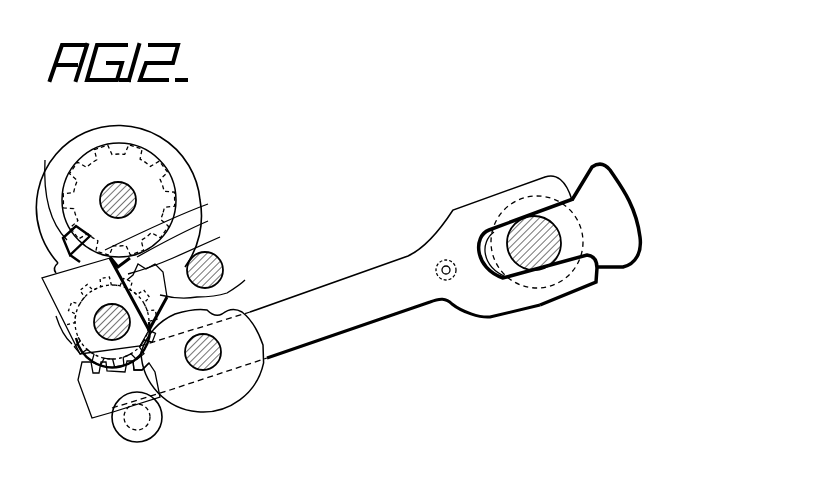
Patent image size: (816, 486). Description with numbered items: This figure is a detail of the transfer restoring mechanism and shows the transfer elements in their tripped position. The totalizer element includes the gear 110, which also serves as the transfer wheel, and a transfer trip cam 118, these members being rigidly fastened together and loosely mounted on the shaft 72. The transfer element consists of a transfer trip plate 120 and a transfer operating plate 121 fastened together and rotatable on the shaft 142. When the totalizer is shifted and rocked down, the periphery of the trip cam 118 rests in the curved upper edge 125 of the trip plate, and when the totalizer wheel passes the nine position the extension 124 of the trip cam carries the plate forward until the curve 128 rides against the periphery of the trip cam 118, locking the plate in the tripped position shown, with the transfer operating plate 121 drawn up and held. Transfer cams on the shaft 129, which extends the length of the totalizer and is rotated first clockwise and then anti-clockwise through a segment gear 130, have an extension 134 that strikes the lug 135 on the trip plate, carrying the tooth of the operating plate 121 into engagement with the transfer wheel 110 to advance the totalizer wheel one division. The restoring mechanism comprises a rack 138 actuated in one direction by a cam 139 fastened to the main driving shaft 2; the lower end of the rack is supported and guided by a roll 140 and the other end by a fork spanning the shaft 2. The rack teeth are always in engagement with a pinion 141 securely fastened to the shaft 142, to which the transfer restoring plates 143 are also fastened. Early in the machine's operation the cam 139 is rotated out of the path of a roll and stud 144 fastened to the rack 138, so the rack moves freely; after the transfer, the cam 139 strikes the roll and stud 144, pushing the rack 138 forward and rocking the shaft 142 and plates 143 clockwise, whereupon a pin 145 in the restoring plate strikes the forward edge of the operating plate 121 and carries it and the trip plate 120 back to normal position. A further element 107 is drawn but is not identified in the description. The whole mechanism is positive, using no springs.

The main driving shaft 2 is at (544, 262).
The shaft 72 is at (114, 197).
The pivot pin 107 is at (245, 265).
The gear 110 is at (143, 165).
The transfer trip cam 118 is at (173, 188).
The transfer trip plate 120 is at (189, 233).
The transfer operating plate 121 is at (228, 293).
The extension 124 is at (45, 160).
The curved upper edge 125 is at (65, 271).
The curve 128 is at (173, 221).
The shaft 129 is at (262, 362).
The segment gear 130 is at (190, 250).
The extension 134 is at (148, 365).
The lug 135 is at (218, 329).
The rack 138 is at (353, 288).
The cam 139 is at (638, 212).
The roll 140 is at (157, 431).
The pinion 141 is at (80, 362).
The shaft 142 is at (92, 347).
The transfer restoring plates 143 is at (74, 333).
The roll and stud 144 is at (445, 278).
The pin 145 is at (60, 322).